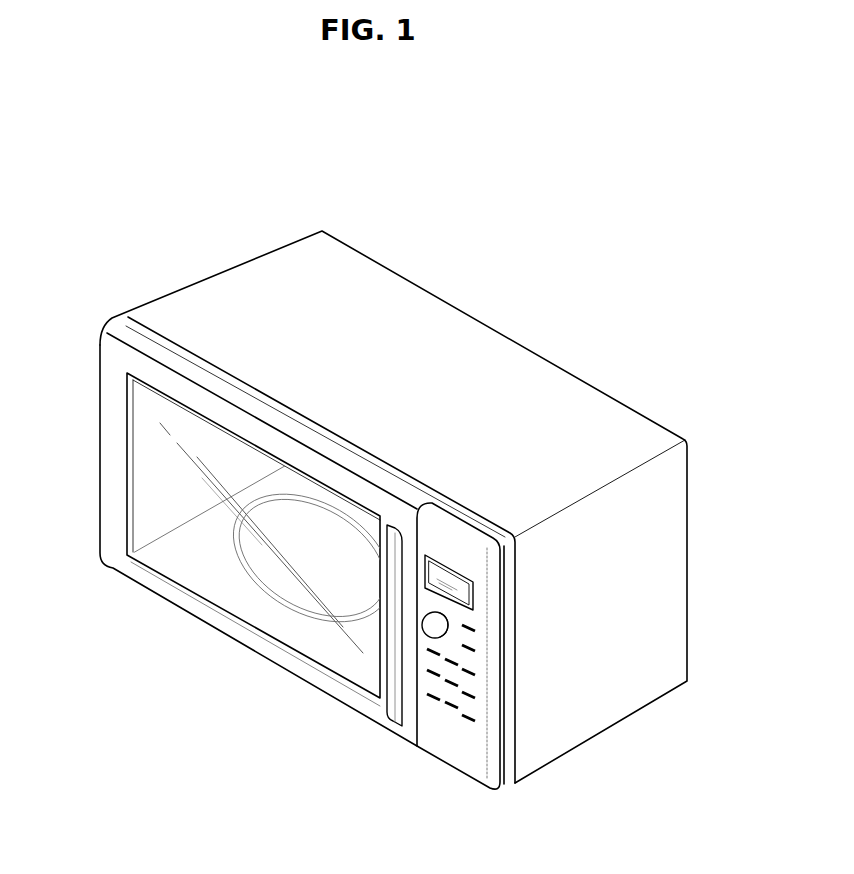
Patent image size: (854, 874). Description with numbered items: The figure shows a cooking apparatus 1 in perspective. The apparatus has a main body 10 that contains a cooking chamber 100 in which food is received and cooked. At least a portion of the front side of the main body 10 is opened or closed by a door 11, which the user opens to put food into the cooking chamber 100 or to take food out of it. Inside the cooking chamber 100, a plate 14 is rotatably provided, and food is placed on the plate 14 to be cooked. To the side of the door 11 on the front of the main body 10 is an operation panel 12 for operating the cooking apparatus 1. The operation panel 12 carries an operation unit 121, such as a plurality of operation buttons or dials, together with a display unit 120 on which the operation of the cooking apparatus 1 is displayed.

The cooking apparatus 1 is at (229, 163).
The main body 10 is at (480, 338).
The door 11 is at (234, 539).
The operation panel 12 is at (488, 646).
The plate 14 is at (287, 592).
The cooking chamber 100 is at (203, 555).
The display unit 120 is at (467, 586).
The operation unit 121 is at (449, 628).